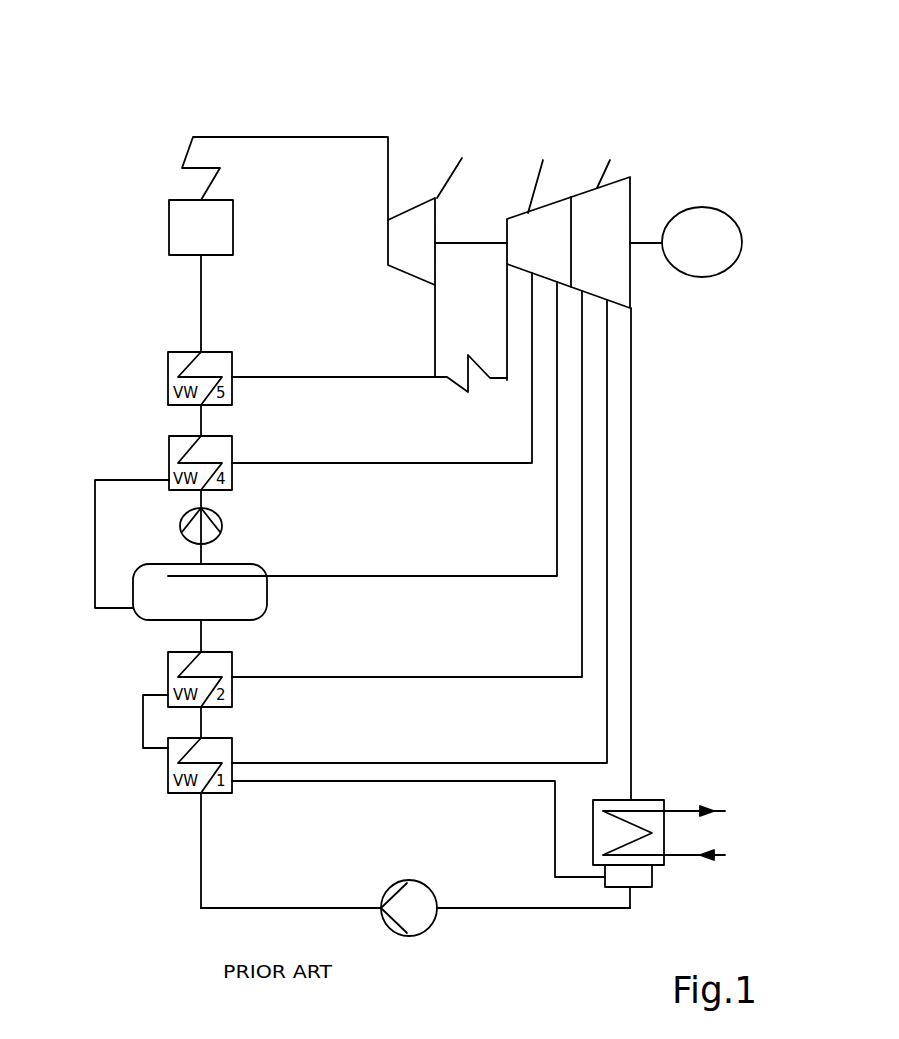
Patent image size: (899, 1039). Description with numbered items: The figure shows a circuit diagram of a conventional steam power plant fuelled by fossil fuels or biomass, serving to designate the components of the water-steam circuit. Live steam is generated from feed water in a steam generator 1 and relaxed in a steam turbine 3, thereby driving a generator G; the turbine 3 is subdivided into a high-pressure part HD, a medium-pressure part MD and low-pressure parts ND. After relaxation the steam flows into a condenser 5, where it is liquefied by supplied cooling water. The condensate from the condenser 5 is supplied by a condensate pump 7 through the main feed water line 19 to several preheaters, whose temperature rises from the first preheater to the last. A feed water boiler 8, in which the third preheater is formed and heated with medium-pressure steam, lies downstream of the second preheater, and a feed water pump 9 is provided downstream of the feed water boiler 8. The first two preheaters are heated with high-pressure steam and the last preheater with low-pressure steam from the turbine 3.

The steam generator 1 is at (168, 220).
The steam turbine 3 is at (510, 112).
The condenser 5 is at (650, 800).
The condensate pump 7 is at (427, 928).
The feed water boiler 8 is at (142, 615).
The feed water pump 9 is at (177, 518).
The feed water line 19 is at (520, 910).